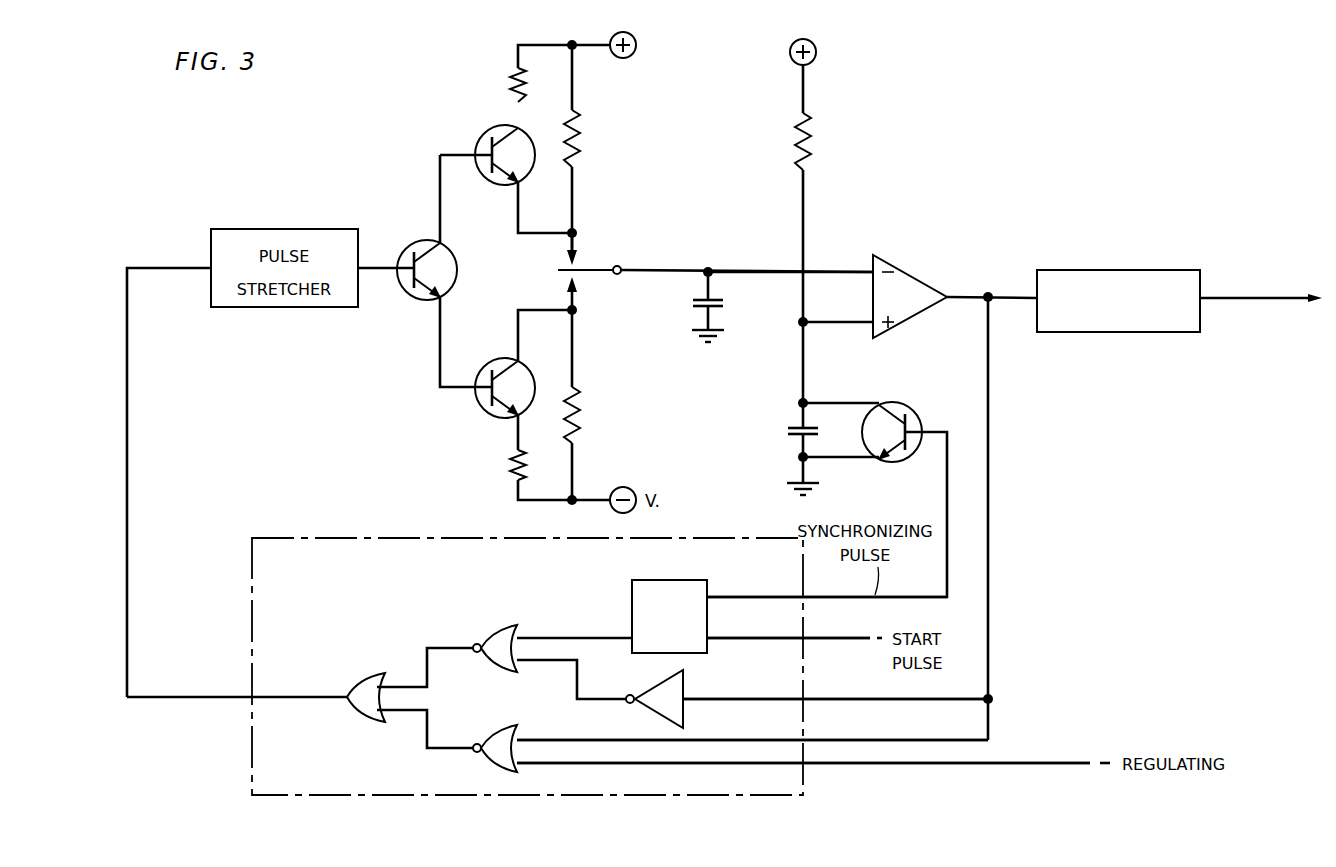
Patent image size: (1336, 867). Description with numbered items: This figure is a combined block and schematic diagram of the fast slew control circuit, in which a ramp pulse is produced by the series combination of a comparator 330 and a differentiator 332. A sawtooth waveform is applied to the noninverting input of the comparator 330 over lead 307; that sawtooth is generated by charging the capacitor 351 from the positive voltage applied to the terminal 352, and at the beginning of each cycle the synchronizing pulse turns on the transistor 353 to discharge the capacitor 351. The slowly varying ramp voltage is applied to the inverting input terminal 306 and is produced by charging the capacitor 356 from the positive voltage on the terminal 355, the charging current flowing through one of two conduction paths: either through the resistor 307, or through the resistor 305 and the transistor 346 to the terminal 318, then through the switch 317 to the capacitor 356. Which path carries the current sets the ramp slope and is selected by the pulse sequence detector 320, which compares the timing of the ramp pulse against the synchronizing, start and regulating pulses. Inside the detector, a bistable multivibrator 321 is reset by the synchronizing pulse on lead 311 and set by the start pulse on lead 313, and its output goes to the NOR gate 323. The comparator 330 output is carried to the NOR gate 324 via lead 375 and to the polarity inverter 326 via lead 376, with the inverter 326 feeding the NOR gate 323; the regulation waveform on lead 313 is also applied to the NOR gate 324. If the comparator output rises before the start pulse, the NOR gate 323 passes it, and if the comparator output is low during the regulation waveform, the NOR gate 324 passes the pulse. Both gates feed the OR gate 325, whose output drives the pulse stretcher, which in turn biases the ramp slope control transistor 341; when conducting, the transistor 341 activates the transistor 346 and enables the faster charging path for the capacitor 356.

The resistor 305 is at (509, 88).
The transistor 346 is at (487, 134).
The terminal 355 is at (633, 58).
The resistor 307 is at (583, 134).
The terminal 318 is at (576, 243).
The ramp slope control transistor 341 is at (460, 272).
The switch 317 is at (600, 274).
The terminal 352 is at (812, 63).
The inverting input terminal 306 is at (827, 270).
The comparator 330 is at (900, 268).
The differentiator 332 is at (1095, 269).
The capacitor 356 is at (727, 300).
The transistor 353 is at (905, 404).
The capacitor 351 is at (785, 430).
The pulse sequence detector 320 is at (292, 537).
The bistable multivibrator 321 is at (640, 580).
The lead 311 is at (770, 595).
The lead 313 is at (778, 638).
The NOR gate 323 is at (497, 624).
The NOR gate 324 is at (497, 725).
The OR gate 325 is at (375, 672).
The polarity inverter 326 is at (650, 706).
The lead 376 is at (868, 698).
The lead 375 is at (868, 739).